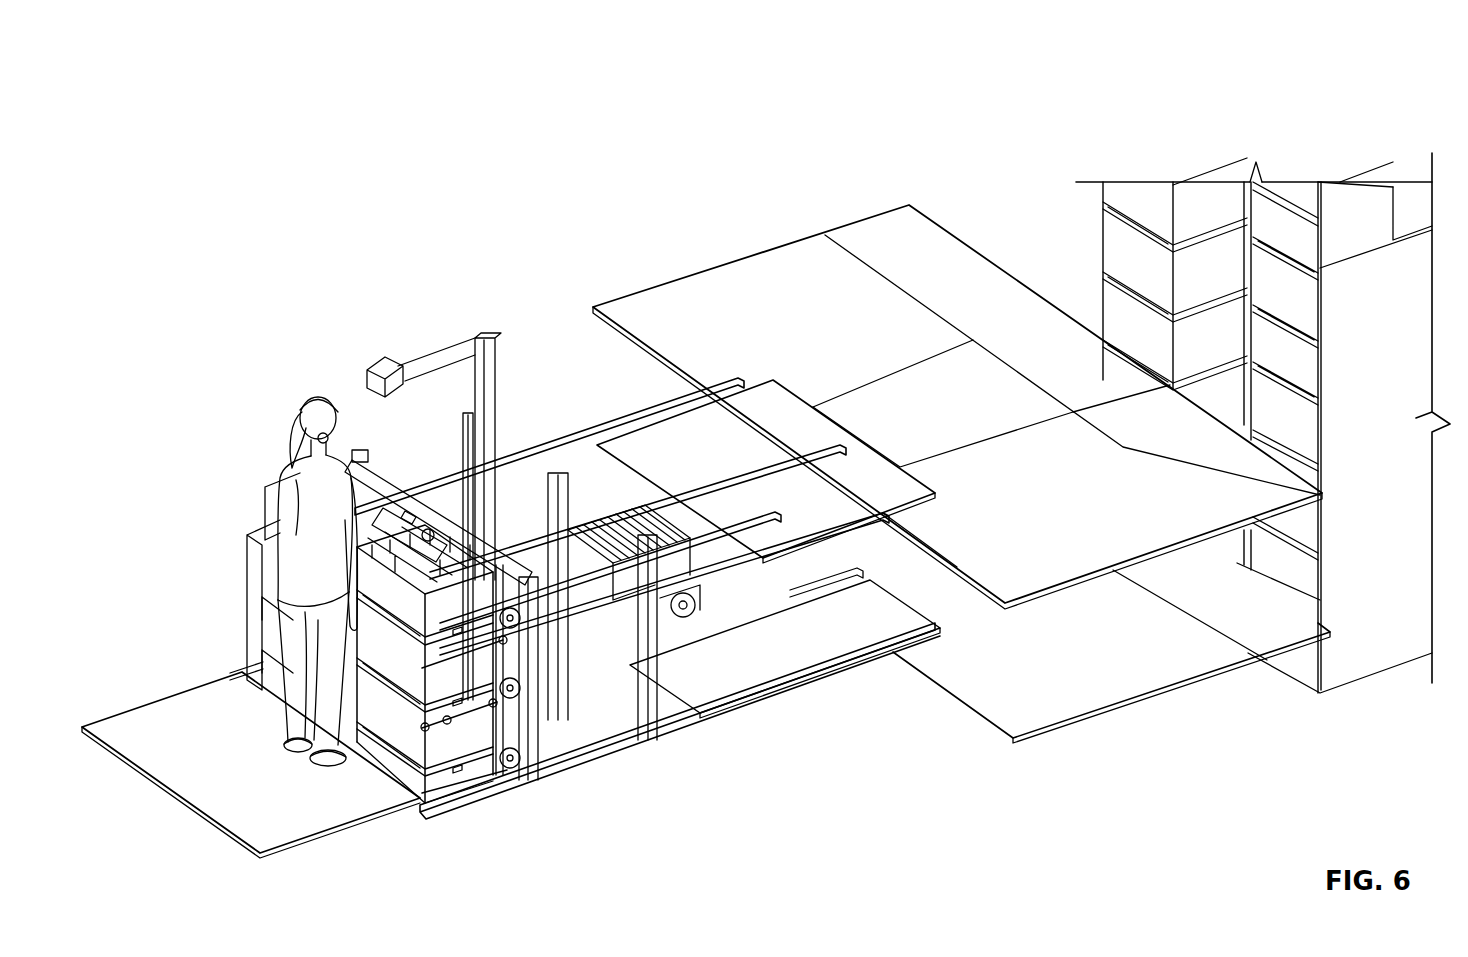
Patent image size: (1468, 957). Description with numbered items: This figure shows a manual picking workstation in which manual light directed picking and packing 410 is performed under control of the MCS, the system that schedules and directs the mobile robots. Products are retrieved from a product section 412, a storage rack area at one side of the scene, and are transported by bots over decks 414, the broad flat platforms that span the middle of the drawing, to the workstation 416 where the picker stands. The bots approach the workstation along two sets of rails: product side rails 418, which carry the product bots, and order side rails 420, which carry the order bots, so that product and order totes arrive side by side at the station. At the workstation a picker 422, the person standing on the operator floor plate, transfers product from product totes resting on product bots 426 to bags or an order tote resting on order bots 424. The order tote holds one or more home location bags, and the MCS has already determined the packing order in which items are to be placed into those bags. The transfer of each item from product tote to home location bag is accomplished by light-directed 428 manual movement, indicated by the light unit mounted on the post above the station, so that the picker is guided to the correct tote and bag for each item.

The manual light directed picking and packing 410 is at (725, 72).
The product section 412 is at (1155, 192).
The decks 414 is at (873, 212).
The workstation 416 is at (212, 393).
The product side rails 418 is at (605, 415).
The order side rails 420 is at (795, 697).
The picker 422 is at (268, 492).
The order bots 424 is at (480, 795).
The product bots 426 is at (245, 572).
The light-directed 428 is at (373, 357).